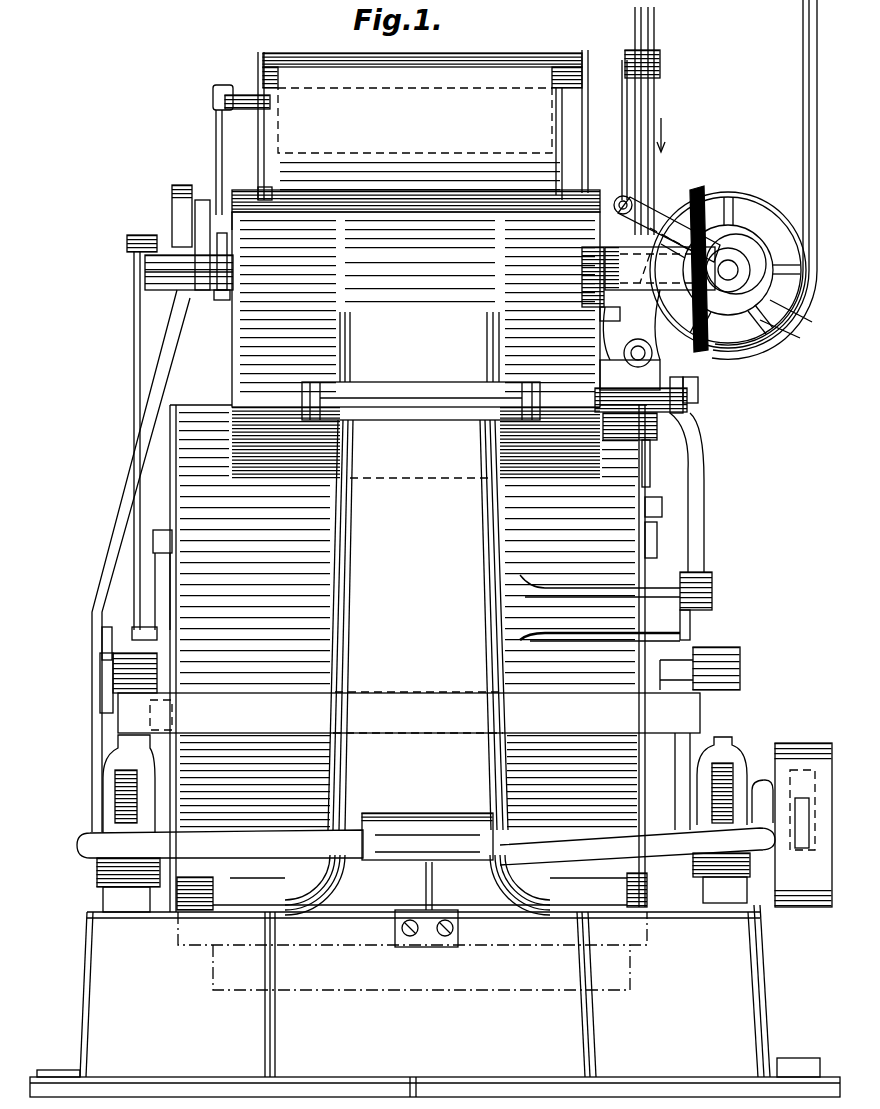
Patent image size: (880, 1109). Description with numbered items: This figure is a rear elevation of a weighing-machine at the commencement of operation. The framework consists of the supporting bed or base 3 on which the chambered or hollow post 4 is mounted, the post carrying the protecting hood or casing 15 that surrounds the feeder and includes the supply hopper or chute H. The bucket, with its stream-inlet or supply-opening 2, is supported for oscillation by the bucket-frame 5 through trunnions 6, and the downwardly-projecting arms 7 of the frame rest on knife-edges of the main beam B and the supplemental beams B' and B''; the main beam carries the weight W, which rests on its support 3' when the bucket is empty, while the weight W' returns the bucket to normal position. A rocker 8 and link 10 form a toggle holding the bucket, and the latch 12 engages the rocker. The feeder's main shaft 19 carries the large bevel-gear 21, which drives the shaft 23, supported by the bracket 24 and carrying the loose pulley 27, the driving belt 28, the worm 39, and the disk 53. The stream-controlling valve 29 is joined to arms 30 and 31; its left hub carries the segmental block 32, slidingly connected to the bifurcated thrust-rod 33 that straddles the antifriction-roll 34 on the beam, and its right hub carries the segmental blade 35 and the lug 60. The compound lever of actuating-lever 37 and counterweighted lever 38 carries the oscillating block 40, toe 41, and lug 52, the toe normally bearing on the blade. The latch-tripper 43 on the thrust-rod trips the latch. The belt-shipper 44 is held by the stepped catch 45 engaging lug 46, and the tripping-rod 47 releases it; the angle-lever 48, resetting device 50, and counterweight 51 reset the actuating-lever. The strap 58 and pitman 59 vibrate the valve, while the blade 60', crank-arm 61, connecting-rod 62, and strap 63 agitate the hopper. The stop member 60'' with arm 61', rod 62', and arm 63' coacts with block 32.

The stream-inlet or supply-opening 2 is at (280, 484).
The supporting bed or base 3 is at (435, 1001).
The support for weight W 3' is at (408, 904).
The chambered or hollow post 4 is at (418, 625).
The bucket-frame or yoke 5 is at (409, 713).
The trunnions 6 is at (740, 668).
The downwardly-projecting arms 7 is at (735, 752).
The rocker 8 is at (157, 680).
The link 10 is at (166, 592).
The latch or detent 12 is at (107, 628).
The protecting hood or casing 15 is at (330, 319).
The main or power shaft of the feeder 19 is at (150, 268).
The bevel-gear 21 is at (700, 195).
The shaft 23 is at (789, 333).
The arm or bracket 24 is at (632, 270).
The loose pulley 27 is at (762, 200).
The endless driving belt or rope 28 is at (802, 45).
The stream-controlling valve 29 is at (500, 54).
The valve arm 30 is at (582, 127).
The valve arm 31 is at (258, 138).
The segmental block 32 is at (205, 217).
The bifurcated thrust-rod 33 is at (160, 393).
The antifriction-roll 34 is at (92, 792).
The segmental blade 35 is at (600, 303).
The actuating-lever 37 is at (602, 322).
The counterweighted lever 38 is at (632, 442).
The worm 39 is at (745, 265).
The oscillating block 40 is at (737, 250).
The projecting toe 41 is at (605, 340).
The latch-tripper 43 is at (104, 684).
The belt-shipper 44 is at (622, 62).
The stepped catch 45 is at (690, 620).
The projecting lug 46 is at (697, 595).
The tripping-rod 47 is at (690, 744).
The angle-lever 48 is at (668, 478).
The resetting device 50 is at (654, 533).
The counterweight 51 is at (660, 507).
The lug 52 is at (665, 355).
The disk 53 is at (802, 311).
The strap or split ring 58 is at (752, 240).
The pitman or rod 59 is at (663, 233).
The lug or ear 60 is at (629, 121).
The disintegrating blade 60' is at (298, 59).
The segmental stop member 60'' is at (256, 226).
The crank-arm 61 is at (241, 77).
The projecting arm 61' is at (137, 230).
The connecting-rod 62 is at (198, 162).
The rod 62' is at (114, 441).
The strap or ring 63 is at (214, 281).
The arm on the rocker 63' is at (171, 618).
The main beam B is at (211, 871).
The supplemental or auxiliary beam B' is at (637, 865).
The supplemental or auxiliary beam B'' is at (159, 787).
The hopper or chute H is at (415, 120).
The weight W is at (427, 836).
The weight W' is at (420, 896).